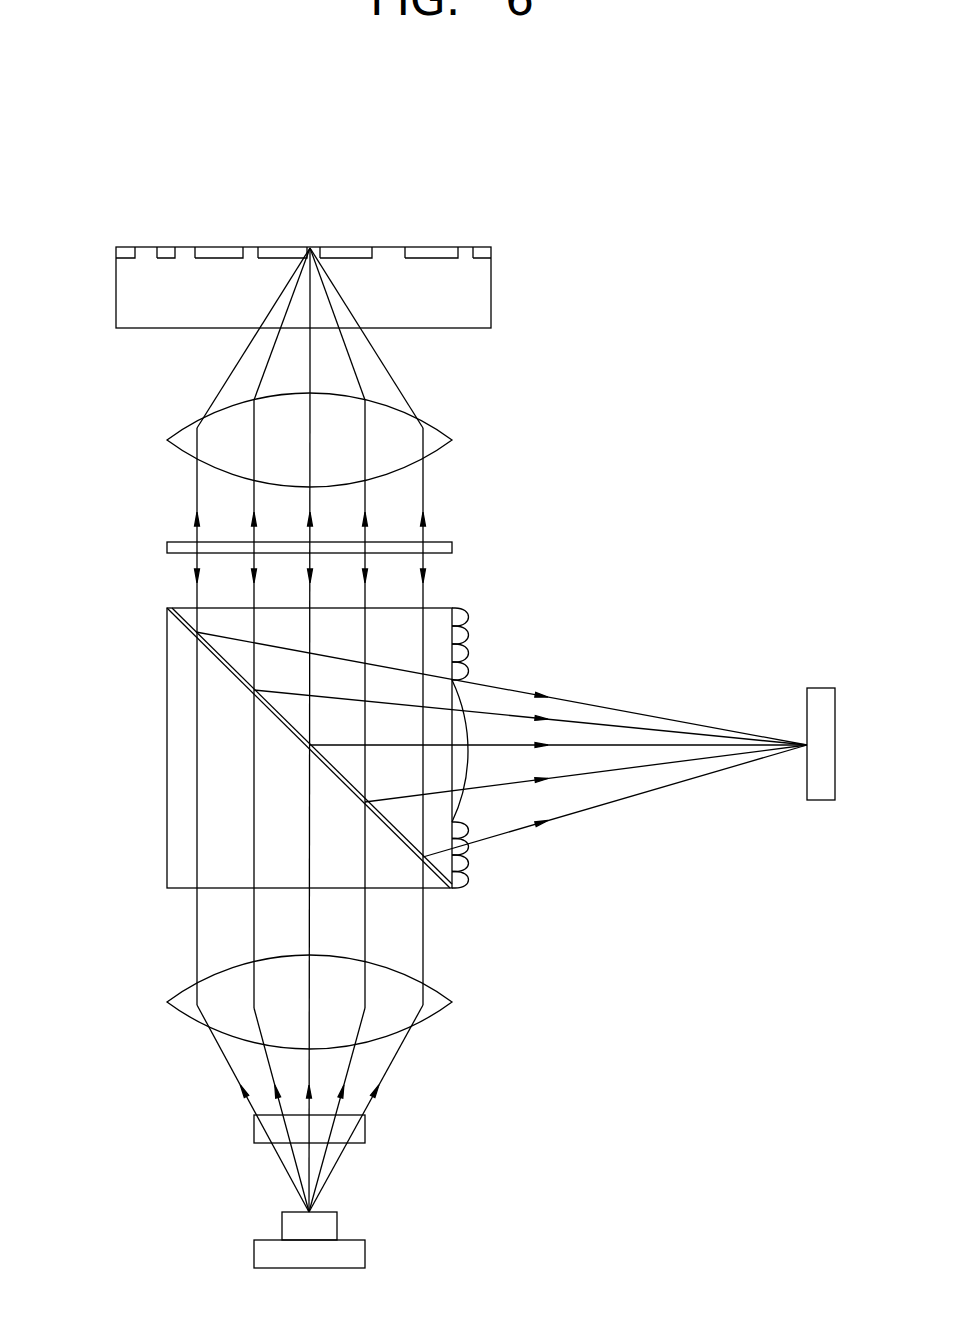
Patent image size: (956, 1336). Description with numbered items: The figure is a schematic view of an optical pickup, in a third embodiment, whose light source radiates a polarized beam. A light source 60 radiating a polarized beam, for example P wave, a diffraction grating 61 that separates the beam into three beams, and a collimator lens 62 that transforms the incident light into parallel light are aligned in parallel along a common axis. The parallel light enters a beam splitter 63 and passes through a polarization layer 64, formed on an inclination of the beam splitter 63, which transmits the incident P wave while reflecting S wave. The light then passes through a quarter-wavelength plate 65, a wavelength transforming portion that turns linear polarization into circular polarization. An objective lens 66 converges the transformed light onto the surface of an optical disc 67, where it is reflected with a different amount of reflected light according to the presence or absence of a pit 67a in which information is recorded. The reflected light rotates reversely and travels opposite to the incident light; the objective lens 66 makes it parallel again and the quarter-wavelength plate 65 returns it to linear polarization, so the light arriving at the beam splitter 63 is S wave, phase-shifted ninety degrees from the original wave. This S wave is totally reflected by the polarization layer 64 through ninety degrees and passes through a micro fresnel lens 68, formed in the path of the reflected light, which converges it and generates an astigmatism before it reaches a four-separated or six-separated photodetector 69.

The light source 60 is at (254, 1253).
The diffraction grating 61 is at (254, 1129).
The collimator lens 62 is at (167, 1002).
The beam splitter 63 is at (176, 775).
The polarization layer 64 is at (170, 630).
The λ/4 wavelength plate 65 is at (167, 548).
The objective lens 66 is at (167, 440).
The optical disc 67 is at (487, 293).
The pit 67a is at (466, 248).
The micro fresnel lens 68 is at (470, 618).
The photodetector 69 is at (820, 688).